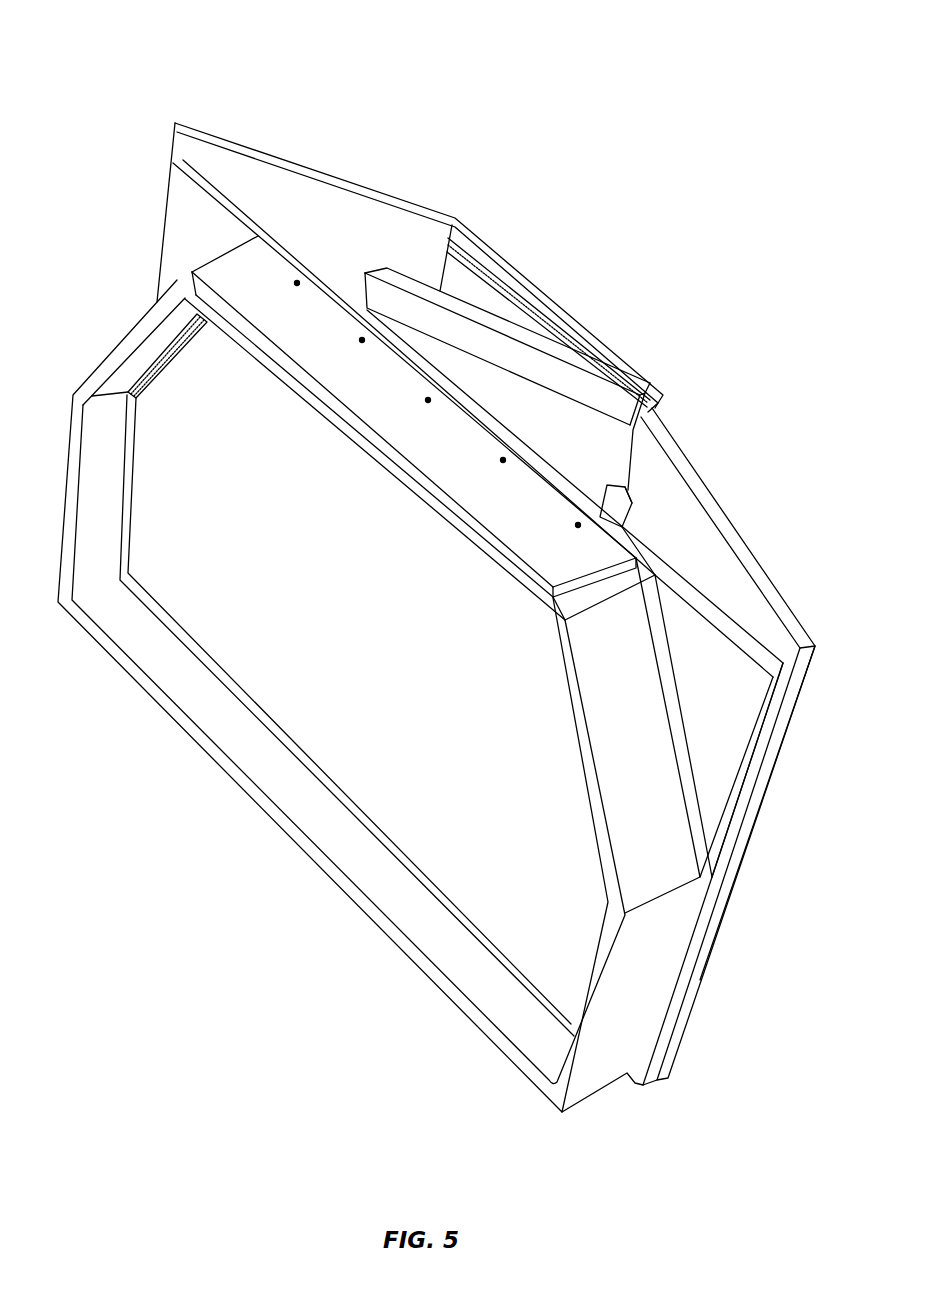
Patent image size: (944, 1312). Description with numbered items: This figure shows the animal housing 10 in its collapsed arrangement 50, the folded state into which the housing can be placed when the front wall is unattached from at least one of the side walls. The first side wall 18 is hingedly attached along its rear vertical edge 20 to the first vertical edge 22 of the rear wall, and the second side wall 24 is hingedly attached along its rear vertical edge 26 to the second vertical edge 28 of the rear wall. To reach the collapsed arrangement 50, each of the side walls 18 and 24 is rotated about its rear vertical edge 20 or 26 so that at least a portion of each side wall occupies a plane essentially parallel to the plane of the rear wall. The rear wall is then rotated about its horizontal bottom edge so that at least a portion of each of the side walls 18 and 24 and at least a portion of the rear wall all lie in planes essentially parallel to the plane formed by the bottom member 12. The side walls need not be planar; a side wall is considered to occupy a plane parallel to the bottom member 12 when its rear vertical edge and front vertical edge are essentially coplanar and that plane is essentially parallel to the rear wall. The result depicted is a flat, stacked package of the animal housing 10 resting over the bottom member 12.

The animal housing 10 is at (112, 46).
The bottom member 12 is at (315, 857).
The first side wall 18 is at (735, 530).
The rear vertical edge of first side wall 20 is at (792, 713).
The first vertical edge of rear wall 22 is at (737, 790).
The second side wall 24 is at (537, 285).
The rear vertical edge of second side wall 26 is at (172, 148).
The second vertical edge of rear wall 28 is at (162, 242).
The collapsed arrangement 50 is at (417, 192).